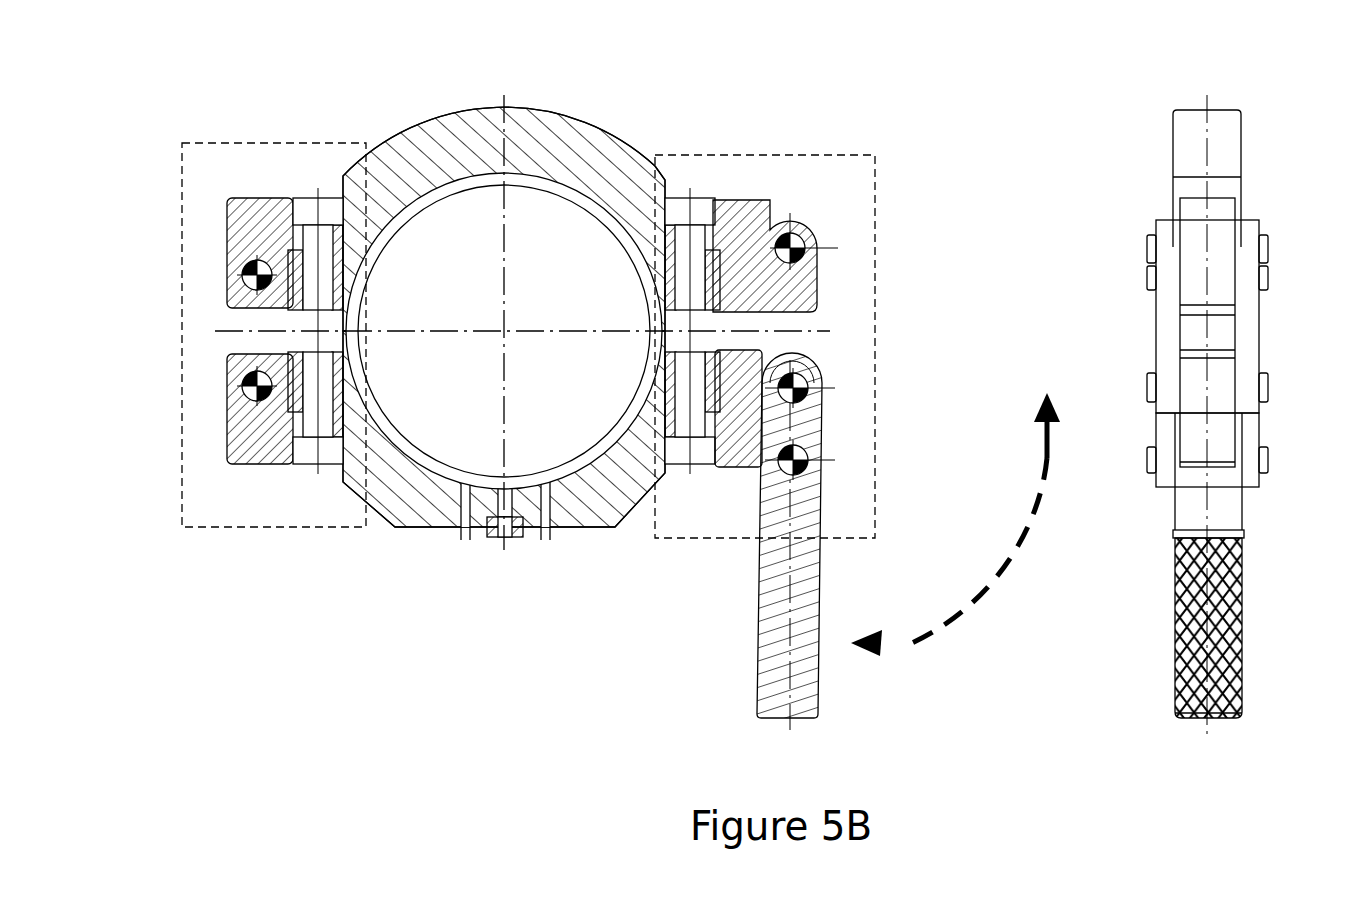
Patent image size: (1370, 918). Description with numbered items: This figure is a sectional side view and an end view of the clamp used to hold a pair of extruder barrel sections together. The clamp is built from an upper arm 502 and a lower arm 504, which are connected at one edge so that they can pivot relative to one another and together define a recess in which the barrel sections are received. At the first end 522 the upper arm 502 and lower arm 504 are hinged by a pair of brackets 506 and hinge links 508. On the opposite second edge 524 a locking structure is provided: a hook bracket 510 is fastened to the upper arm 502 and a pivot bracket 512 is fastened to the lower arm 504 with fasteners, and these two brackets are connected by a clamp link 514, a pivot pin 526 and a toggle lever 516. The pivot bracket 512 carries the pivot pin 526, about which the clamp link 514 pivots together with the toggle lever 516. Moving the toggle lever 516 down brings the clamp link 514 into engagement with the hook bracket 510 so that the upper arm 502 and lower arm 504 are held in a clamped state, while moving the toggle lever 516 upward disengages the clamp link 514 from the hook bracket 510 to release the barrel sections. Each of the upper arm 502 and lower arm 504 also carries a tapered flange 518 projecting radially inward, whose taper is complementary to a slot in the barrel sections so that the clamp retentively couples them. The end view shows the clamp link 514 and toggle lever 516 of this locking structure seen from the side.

The upper arm 502 is at (452, 128).
The lower arm 504 is at (413, 515).
The brackets 506 is at (245, 233).
The hinge links 508 is at (1160, 290).
The hook bracket 510 is at (740, 200).
The pivot bracket 512 is at (742, 472).
The clamp link 514 is at (1248, 222).
The toggle lever 516 is at (795, 641).
The tapered flange 518 is at (488, 182).
The first end 522 is at (245, 143).
The second edge 524 is at (836, 155).
The pivot pin 526 is at (795, 388).